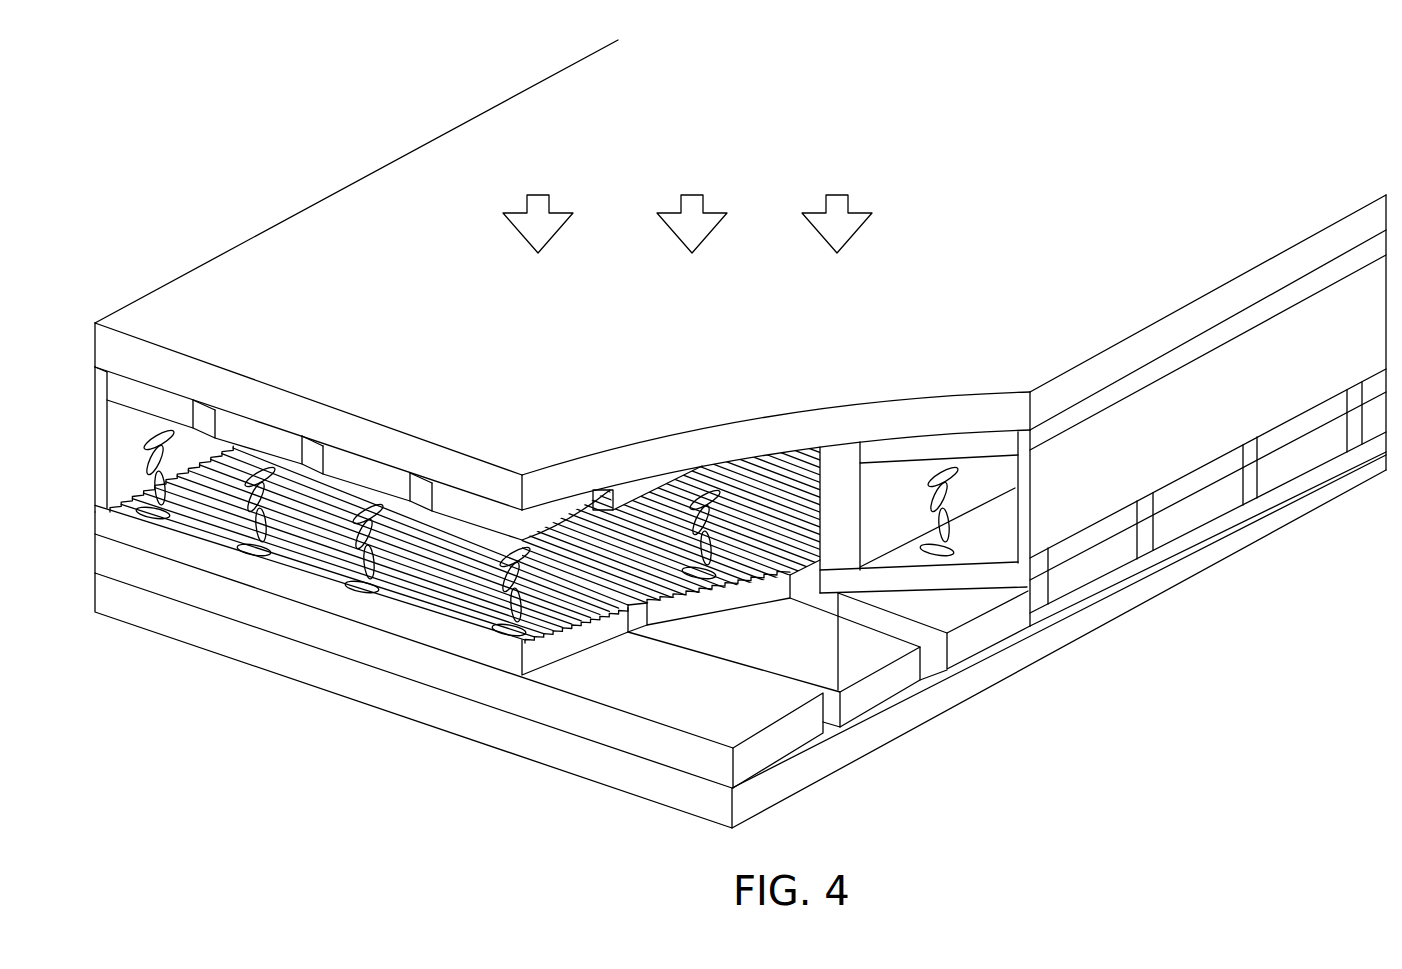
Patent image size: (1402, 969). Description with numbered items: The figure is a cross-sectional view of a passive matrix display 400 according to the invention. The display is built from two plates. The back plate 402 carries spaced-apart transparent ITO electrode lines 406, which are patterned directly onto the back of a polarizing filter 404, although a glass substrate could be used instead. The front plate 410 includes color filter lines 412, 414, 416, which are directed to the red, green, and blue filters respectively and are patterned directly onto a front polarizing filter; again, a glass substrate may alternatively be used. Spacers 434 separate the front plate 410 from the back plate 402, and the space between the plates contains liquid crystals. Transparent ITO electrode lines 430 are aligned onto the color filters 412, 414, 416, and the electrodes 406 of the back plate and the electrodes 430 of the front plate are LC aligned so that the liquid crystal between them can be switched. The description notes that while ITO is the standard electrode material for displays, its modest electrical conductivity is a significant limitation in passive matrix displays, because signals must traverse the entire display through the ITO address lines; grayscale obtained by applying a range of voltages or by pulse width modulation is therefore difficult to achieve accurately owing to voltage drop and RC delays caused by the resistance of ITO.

The passive matrix display 400 is at (862, 93).
The back plate 402 is at (528, 128).
The polarizing filter 404 is at (554, 315).
The transparent ITO electrode lines 406 is at (168, 405).
The front plate 410 is at (572, 773).
The color filter line 412 is at (776, 758).
The color filter line 414 is at (887, 697).
The color filter line 416 is at (992, 638).
The transparent ITO electrode lines 430 is at (500, 652).
The spacers 434 is at (525, 588).